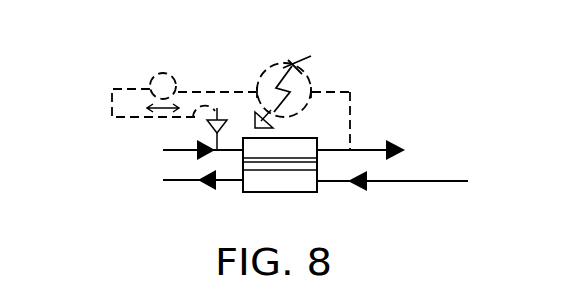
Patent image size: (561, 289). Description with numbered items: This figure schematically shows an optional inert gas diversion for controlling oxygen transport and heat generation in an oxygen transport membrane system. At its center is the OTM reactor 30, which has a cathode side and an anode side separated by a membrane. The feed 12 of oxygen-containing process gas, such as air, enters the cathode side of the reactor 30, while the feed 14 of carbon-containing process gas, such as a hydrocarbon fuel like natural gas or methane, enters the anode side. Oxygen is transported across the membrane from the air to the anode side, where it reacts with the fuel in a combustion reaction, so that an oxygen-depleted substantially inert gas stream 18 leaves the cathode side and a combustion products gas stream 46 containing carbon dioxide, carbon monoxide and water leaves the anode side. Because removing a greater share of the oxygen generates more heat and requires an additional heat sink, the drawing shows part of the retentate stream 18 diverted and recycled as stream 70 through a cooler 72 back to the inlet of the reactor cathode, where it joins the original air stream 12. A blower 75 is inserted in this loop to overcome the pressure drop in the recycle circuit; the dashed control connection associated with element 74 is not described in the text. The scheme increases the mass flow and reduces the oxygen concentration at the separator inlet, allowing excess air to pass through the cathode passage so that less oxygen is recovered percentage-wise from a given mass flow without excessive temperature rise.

The feed of oxygen-containing process gas 12 is at (166, 150).
The feed of carbon-containing process gas 14 is at (392, 181).
The oxygen-depleted substantially inert gas stream 18 is at (370, 150).
The OTM reactor 30 is at (311, 193).
The combustion products gas stream 46 is at (166, 181).
The recycle stream 70 is at (350, 86).
The cooler 72 is at (298, 122).
The heater 74 is at (280, 62).
The blower 75 is at (150, 78).